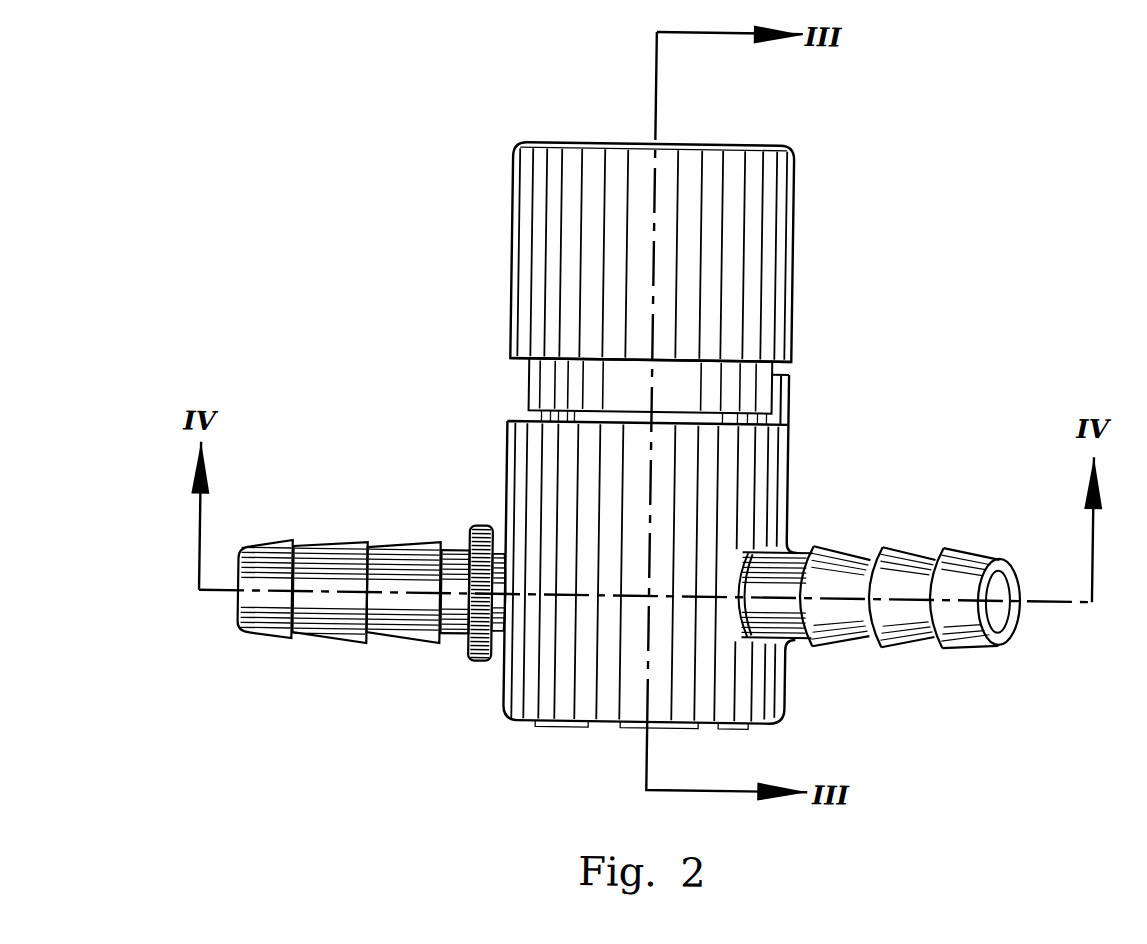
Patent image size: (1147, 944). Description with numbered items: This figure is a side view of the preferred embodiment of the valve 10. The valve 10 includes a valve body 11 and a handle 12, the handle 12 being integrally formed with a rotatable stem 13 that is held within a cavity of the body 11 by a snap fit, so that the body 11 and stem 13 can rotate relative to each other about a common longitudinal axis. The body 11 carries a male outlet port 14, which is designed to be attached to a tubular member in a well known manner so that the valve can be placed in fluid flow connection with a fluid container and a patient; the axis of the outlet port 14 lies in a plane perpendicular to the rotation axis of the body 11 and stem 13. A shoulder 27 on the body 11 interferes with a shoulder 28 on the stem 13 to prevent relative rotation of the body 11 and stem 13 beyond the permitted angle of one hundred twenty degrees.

The valve 10 is at (632, 434).
The valve body 11 is at (762, 506).
The handle 12 is at (790, 215).
The rotatable stem 13 is at (535, 148).
The male outlet port 14 is at (266, 645).
The shoulder 27 is at (788, 397).
The shoulder 28 is at (539, 389).